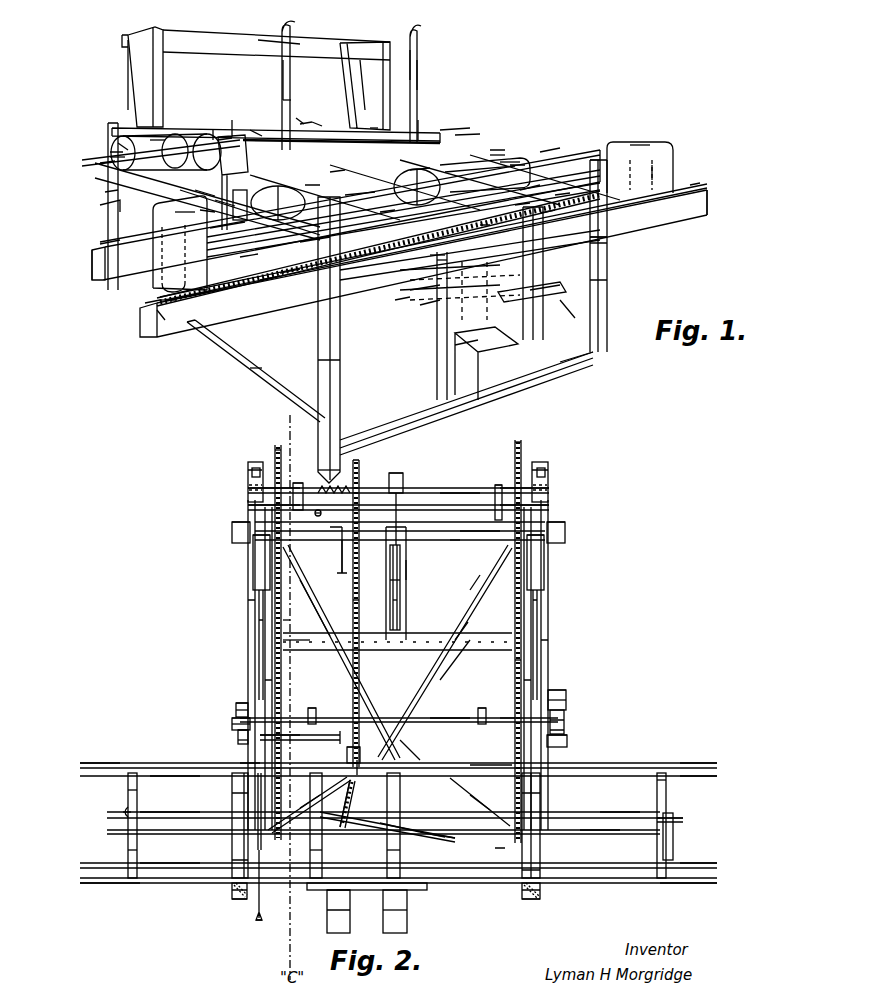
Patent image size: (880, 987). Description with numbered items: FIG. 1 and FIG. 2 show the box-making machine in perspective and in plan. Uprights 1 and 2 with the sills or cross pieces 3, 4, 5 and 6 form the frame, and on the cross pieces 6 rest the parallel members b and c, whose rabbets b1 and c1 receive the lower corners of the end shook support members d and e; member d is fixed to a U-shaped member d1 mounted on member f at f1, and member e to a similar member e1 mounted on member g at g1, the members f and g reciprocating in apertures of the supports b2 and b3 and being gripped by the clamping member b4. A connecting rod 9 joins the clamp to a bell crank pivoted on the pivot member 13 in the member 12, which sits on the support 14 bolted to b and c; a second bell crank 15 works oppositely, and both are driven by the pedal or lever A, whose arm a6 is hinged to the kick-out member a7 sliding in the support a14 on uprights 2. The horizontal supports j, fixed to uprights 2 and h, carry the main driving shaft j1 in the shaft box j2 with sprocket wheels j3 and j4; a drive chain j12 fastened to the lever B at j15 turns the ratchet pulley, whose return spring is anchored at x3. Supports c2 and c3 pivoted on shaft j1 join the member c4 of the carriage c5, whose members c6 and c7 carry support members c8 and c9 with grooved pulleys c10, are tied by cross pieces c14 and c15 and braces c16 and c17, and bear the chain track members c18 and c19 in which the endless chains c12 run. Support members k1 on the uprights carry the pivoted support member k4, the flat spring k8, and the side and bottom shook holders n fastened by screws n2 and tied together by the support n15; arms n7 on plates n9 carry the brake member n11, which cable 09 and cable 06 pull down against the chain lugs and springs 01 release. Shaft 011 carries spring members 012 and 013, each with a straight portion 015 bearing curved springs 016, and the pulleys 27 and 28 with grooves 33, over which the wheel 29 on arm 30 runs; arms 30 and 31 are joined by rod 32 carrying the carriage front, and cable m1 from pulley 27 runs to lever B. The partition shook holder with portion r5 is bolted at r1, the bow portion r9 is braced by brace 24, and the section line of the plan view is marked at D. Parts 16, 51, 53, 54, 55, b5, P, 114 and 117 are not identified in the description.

In FIG. 1, the support n15 is at (260, 46).
In FIG. 1, the side and bottom shook holder n is at (367, 50).
In FIG. 2, the side and bottom shook holder n is at (541, 565).
In FIG. 1, the curved spring members 016 is at (420, 38).
In FIG. 1, the spring member 013 is at (418, 62).
In FIG. 2, the spring member 013 is at (480, 708).
In FIG. 1, the carriage c5 is at (495, 150).
In FIG. 2, the carriage c5 is at (513, 675).
In FIG. 1, the spring member 012 is at (283, 100).
In FIG. 1, the springs 01 is at (300, 120).
In FIG. 2, the springs 01 is at (549, 507).
In FIG. 1, the arm n7 is at (308, 122).
In FIG. 1, the plate n9 is at (318, 124).
In FIG. 1, the bolts or screws n2 is at (372, 128).
In FIG. 1, the support member k4 is at (420, 122).
In FIG. 2, the support member k4 is at (531, 680).
In FIG. 1, the pulley 28 is at (450, 130).
In FIG. 2, the pulley 28 is at (566, 700).
In FIG. 1, the support member k1 is at (470, 134).
In FIG. 2, the support member k1 is at (549, 640).
In FIG. 1, the grooved pulley c10 is at (372, 192).
In FIG. 2, the grooved pulley c10 is at (498, 850).
In FIG. 1, the endless chain c12 is at (495, 152).
In FIG. 1, the support member c8 is at (508, 160).
In FIG. 1, the sill or cross piece 5 is at (478, 222).
In FIG. 2, the sill or cross piece 5 is at (540, 800).
In FIG. 1, the foot piece 53 is at (594, 160).
In FIG. 2, the foot piece 53 is at (567, 740).
In FIG. 1, the end shook support member e is at (635, 150).
In FIG. 2, the end shook support member e is at (667, 800).
In FIG. 1, the U-shaped member e1 is at (655, 168).
In FIG. 1, the rabbet b1 is at (145, 305).
In FIG. 2, the rabbet b1 is at (660, 883).
In FIG. 1, the parallel member b is at (165, 322).
In FIG. 2, the parallel member b is at (700, 872).
In FIG. 1, the sprocket wheel j3 is at (123, 145).
In FIG. 2, the sprocket wheel j3 is at (278, 450).
In FIG. 1, the roller 16 is at (150, 140).
In FIG. 1, the main driving shaft j1 is at (115, 157).
In FIG. 2, the main driving shaft j1 is at (475, 490).
In FIG. 1, the horizontal supports j is at (105, 165).
In FIG. 1, the upright 2 is at (108, 192).
In FIG. 2, the upright 2 is at (565, 530).
In FIG. 1, the rabbet c1 is at (108, 238).
In FIG. 2, the rabbet c1 is at (680, 770).
In FIG. 1, the parallel member c is at (92, 262).
In FIG. 2, the parallel member c is at (650, 765).
In FIG. 1, the end shook support member d is at (170, 225).
In FIG. 2, the end shook support member d is at (128, 852).
In FIG. 1, the U-shaped member d1 is at (167, 278).
In FIG. 2, the U-shaped member d1 is at (128, 795).
In FIG. 1, the sill or cross piece 3 is at (256, 367).
In FIG. 1, the upright 1 is at (608, 285).
In FIG. 2, the upright 1 is at (530, 899).
In FIG. 1, the member g is at (268, 284).
In FIG. 1, the member f is at (290, 277).
In FIG. 2, the member f is at (625, 814).
In FIG. 1, the wheel 29 is at (198, 192).
In FIG. 2, the wheel 29 is at (236, 722).
In FIG. 1, the arm 30 is at (220, 202).
In FIG. 2, the arm 30 is at (240, 740).
In FIG. 1, the pulley 27 is at (212, 140).
In FIG. 2, the pulley 27 is at (238, 710).
In FIG. 1, the member 12 is at (253, 130).
In FIG. 1, the kick-out member a7 is at (335, 170).
In FIG. 2, the kick-out member a7 is at (400, 600).
In FIG. 1, the cross piece c15 is at (420, 168).
In FIG. 2, the cross piece c15 is at (440, 765).
In FIG. 1, the bell crank 15 is at (522, 205).
In FIG. 2, the bell crank 15 is at (365, 462).
In FIG. 1, the bow portion r9 is at (277, 205).
In FIG. 2, the bow portion r9 is at (375, 840).
In FIG. 1, the bolt r1 is at (388, 210).
In FIG. 1, the support 14 is at (550, 212).
In FIG. 2, the support 14 is at (387, 850).
In FIG. 1, the pivot member 13 is at (250, 254).
In FIG. 1, the straight extended portion 015 is at (222, 224).
In FIG. 2, the straight extended portion 015 is at (310, 708).
In FIG. 1, the brace member 24 is at (540, 185).
In FIG. 1, the clamping member b4 is at (450, 258).
In FIG. 2, the clamping member b4 is at (322, 845).
In FIG. 1, the panel b5 is at (520, 260).
In FIG. 2, the panel b5 is at (430, 840).
In FIG. 1, the cable m1 is at (420, 290).
In FIG. 2, the cable m1 is at (296, 740).
In FIG. 1, the drive chain j12 is at (400, 300).
In FIG. 2, the drive chain j12 is at (360, 610).
In FIG. 1, the attachment point j15 is at (430, 305).
In FIG. 1, the section line D is at (450, 345).
In FIG. 1, the lever or pedal A is at (555, 278).
In FIG. 2, the lever or pedal A is at (400, 912).
In FIG. 1, the cross piece 6 is at (610, 237).
In FIG. 1, the cross piece 4 is at (585, 358).
In FIG. 2, the shaft box j2 is at (548, 470).
In FIG. 2, the brake member n11 is at (450, 489).
In FIG. 2, the flat spring member k8 is at (536, 605).
In FIG. 2, the lever 54 is at (233, 720).
In FIG. 2, the uprights h is at (238, 733).
In FIG. 2, the rod 32 is at (478, 765).
In FIG. 2, the mounting point f1 is at (123, 812).
In FIG. 2, the bracket 51 is at (530, 875).
In FIG. 2, the lever B is at (338, 912).
In FIG. 2, the support b2 is at (310, 812).
In FIG. 2, the straight portion r5 is at (352, 795).
In FIG. 2, the support b3 is at (445, 834).
In FIG. 2, the support member c9 is at (480, 810).
In FIG. 2, the foot 55 is at (542, 893).
In FIG. 2, the mounting point g1 is at (675, 820).
In FIG. 2, the connecting rod 9 is at (610, 832).
In FIG. 2, the arm 31 is at (566, 732).
In FIG. 2, the groove 33 is at (560, 693).
In FIG. 2, the sprocket wheel j4 is at (521, 450).
In FIG. 2, the support c3 is at (498, 485).
In FIG. 2, the post P is at (398, 473).
In FIG. 2, the support c2 is at (298, 483).
In FIG. 2, the column 117 is at (325, 470).
In FIG. 2, the attachment point x3 is at (322, 514).
In FIG. 2, the cable 09 is at (340, 560).
In FIG. 2, the brace c16 is at (315, 605).
In FIG. 2, the chain track member c18 is at (290, 622).
In FIG. 2, the arm a6 is at (400, 578).
In FIG. 2, the cable 06 is at (412, 553).
In FIG. 2, the support a14 is at (450, 545).
In FIG. 2, the carriage member c4 is at (475, 535).
In FIG. 2, the brace c17 is at (470, 588).
In FIG. 2, the chain track member c19 is at (470, 625).
In FIG. 2, the carriage member c6 is at (290, 660).
In FIG. 2, the shaft 011 is at (445, 718).
In FIG. 2, the carriage member c7 is at (512, 715).
In FIG. 2, the cross piece c14 is at (435, 665).
In FIG. 2, the block 114 is at (370, 752).